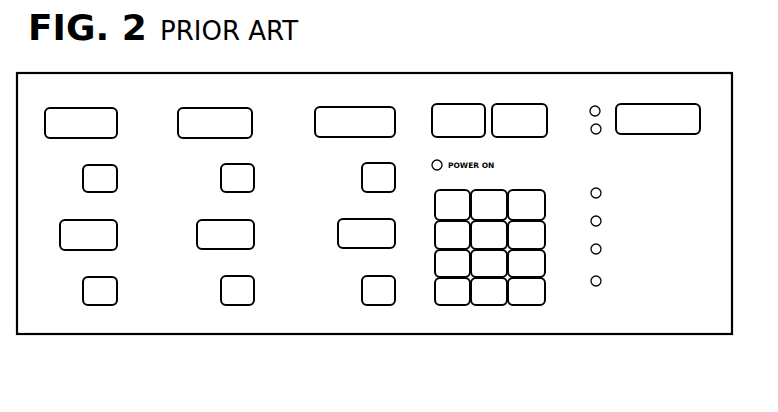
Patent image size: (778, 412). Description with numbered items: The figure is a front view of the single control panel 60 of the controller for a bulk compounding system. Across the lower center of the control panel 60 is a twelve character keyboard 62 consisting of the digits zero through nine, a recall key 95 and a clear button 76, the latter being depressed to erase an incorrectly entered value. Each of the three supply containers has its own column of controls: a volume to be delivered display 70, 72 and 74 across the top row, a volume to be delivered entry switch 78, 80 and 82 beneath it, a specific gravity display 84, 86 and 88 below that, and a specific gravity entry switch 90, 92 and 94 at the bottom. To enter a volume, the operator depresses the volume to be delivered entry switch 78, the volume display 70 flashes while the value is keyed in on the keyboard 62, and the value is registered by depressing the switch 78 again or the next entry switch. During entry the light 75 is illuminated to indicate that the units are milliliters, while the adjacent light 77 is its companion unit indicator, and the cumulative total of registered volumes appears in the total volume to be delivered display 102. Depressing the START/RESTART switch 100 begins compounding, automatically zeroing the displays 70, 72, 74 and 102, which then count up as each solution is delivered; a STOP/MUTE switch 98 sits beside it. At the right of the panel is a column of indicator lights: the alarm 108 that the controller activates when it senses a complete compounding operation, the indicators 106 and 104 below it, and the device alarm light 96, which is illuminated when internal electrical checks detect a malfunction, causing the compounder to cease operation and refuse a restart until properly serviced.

The control panel 60 is at (219, 340).
The keyboard 62 is at (492, 275).
The volume to be delivered display 70 is at (105, 108).
The volume to be delivered display 72 is at (218, 108).
The volume to be delivered display 74 is at (354, 107).
The light 75 is at (600, 124).
The clear button 76 is at (534, 305).
The g indicator 77 is at (593, 106).
The volume to be delivered entry switch 78 is at (117, 188).
The volume to be delivered entry switch 80 is at (254, 188).
The volume to be delivered entry switch 82 is at (395, 188).
The specific gravity display 84 is at (117, 236).
The specific gravity display 86 is at (254, 236).
The specific gravity display 88 is at (395, 234).
The specific gravity entry switch 90 is at (117, 300).
The specific gravity entry switch 92 is at (254, 300).
The specific gravity entry switch 94 is at (395, 300).
The recall key 95 is at (459, 305).
The device alarm light 96 is at (598, 286).
The stop/mute button 98 is at (522, 104).
The START/RESTART switch 100 is at (458, 104).
The total volume to be delivered display 102 is at (667, 104).
The no final container indicator 104 is at (590, 245).
The no flow indicator 106 is at (590, 217).
The alarm 108 is at (590, 188).